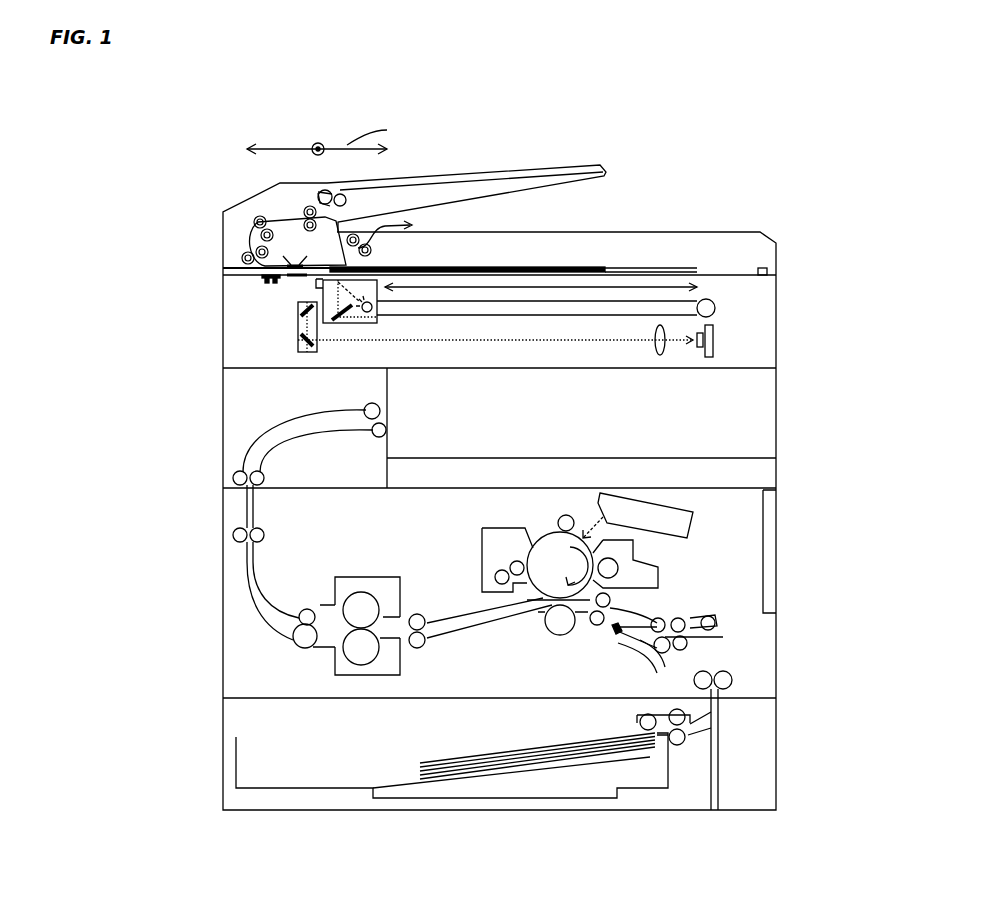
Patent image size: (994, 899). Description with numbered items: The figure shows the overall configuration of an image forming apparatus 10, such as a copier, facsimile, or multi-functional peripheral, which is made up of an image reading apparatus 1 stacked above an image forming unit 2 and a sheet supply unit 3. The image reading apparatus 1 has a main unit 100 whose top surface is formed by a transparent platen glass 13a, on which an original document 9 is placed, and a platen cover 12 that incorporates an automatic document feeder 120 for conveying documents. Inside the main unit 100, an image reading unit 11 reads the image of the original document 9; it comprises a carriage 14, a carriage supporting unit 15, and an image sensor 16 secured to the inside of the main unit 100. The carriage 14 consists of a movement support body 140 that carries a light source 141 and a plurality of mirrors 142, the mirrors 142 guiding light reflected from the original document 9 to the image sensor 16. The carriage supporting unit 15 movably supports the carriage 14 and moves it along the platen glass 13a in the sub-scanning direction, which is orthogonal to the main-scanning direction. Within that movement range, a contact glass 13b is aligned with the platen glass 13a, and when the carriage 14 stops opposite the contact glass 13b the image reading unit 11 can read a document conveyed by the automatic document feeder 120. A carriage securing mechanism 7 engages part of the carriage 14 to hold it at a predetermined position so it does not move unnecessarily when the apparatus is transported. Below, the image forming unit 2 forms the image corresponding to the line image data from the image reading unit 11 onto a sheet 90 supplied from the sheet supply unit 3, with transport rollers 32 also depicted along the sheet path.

The image reading apparatus 1 is at (215, 197).
The image forming apparatus 10 is at (762, 150).
The main unit 100 is at (220, 362).
The image forming unit 2 is at (222, 627).
The sheet supply unit 3 is at (222, 732).
The carriage securing mechanism 7 is at (262, 279).
The original document 9 is at (592, 267).
The image reading unit 11 is at (248, 309).
The platen cover 12 is at (222, 250).
The automatic document feeder 120 is at (237, 232).
The platen glass 13a is at (388, 267).
The contact glass 13b is at (300, 278).
The carriage 14 is at (293, 330).
The movement support body 140 is at (332, 323).
The light source 141 is at (372, 313).
The mirrors 142 is at (343, 318).
The carriage supporting unit 15 is at (703, 300).
The image sensor 16 is at (706, 358).
The transport rollers 32 is at (368, 406).
The sheet 90 is at (483, 755).